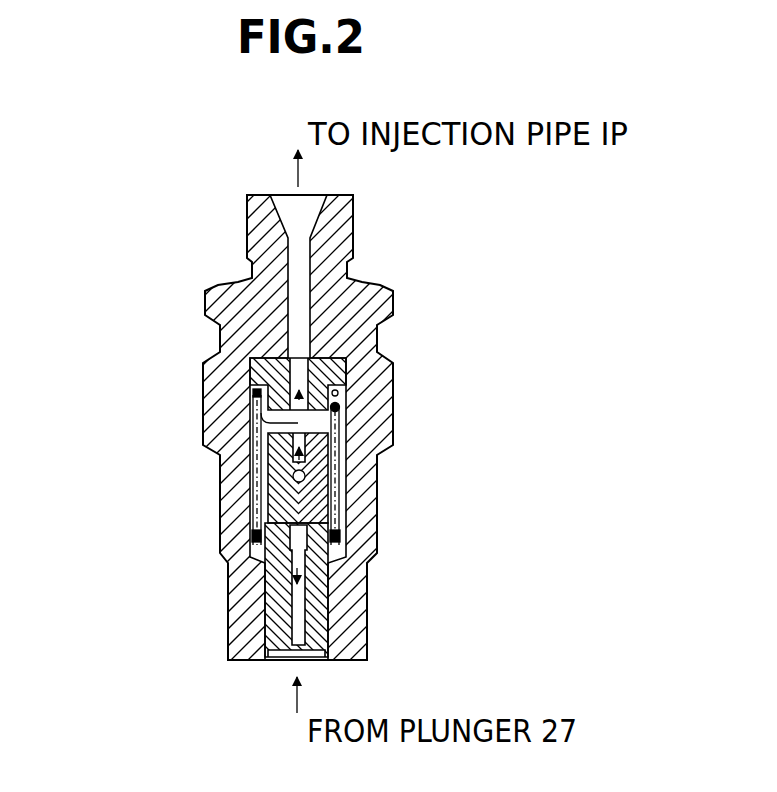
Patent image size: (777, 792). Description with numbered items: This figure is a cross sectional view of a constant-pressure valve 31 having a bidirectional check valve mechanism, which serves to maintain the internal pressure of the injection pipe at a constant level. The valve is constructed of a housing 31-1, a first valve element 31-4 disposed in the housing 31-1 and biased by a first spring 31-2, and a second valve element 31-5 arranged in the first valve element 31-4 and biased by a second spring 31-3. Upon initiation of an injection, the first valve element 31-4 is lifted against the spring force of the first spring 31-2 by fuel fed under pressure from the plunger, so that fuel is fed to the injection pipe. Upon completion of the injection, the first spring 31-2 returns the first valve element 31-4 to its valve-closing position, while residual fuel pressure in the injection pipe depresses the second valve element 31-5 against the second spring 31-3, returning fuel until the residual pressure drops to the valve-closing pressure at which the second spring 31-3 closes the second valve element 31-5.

The constant-pressure valve 31 is at (400, 385).
The housing 31-1 is at (371, 363).
The first spring 31-2 is at (262, 452).
The second spring 31-3 is at (340, 537).
The first valve element 31-4 is at (290, 480).
The second valve element 31-5 is at (305, 480).